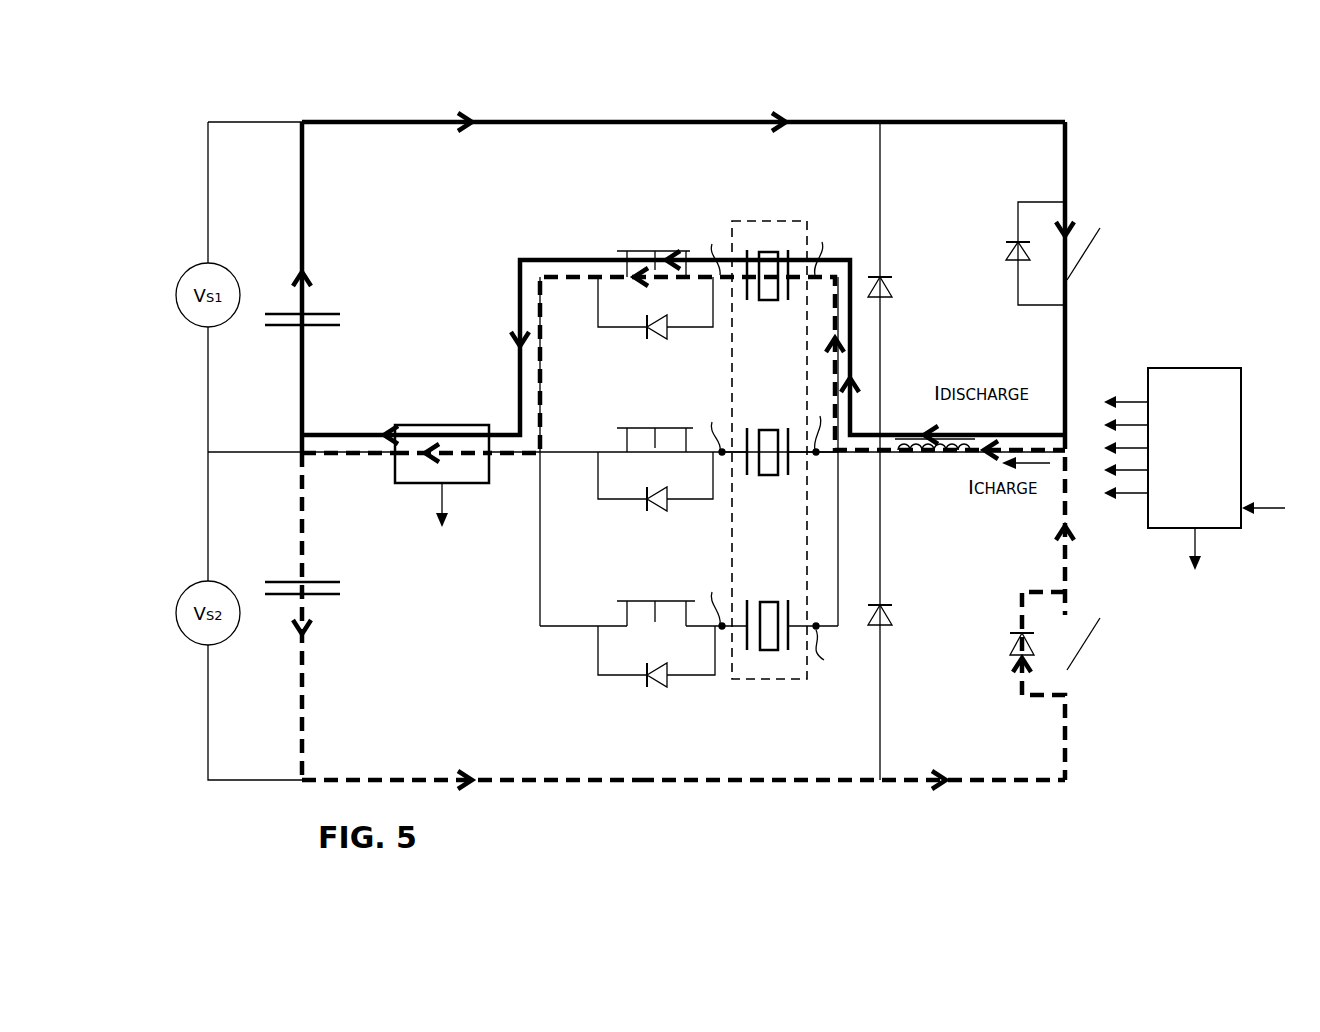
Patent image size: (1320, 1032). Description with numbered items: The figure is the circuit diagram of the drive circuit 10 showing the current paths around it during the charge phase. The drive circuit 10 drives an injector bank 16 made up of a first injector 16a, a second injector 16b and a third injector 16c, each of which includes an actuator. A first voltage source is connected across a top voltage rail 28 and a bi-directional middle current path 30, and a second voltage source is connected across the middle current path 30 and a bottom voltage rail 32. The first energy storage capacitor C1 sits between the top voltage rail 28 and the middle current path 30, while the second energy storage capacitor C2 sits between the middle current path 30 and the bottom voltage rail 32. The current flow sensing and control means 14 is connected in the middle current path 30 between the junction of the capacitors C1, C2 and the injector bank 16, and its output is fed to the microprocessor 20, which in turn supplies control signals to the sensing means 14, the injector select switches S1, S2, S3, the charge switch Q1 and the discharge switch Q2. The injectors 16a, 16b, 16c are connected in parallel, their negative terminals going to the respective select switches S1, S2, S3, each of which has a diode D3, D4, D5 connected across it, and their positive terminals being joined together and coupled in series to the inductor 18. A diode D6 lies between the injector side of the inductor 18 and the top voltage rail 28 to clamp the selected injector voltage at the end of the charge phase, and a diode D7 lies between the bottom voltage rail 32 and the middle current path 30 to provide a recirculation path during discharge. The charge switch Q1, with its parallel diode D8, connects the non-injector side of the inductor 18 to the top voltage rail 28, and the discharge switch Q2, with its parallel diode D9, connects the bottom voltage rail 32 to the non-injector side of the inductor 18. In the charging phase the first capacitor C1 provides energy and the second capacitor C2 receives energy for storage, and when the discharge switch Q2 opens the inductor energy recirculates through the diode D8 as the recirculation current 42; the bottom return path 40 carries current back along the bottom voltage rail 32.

The drive circuit 10 is at (1034, 104).
The current flow sensing and control means 14 is at (440, 424).
The injector bank 16 is at (770, 460).
The first injector 16a is at (770, 250).
The second injector 16b is at (770, 428).
The third injector 16c is at (770, 600).
The inductor 18 is at (936, 456).
The microprocessor 20 is at (1190, 458).
The top voltage rail 28 is at (345, 120).
The bi-directional middle current path 30 is at (347, 450).
The bottom voltage rail 32 is at (348, 778).
The lower return line 40 is at (850, 788).
The recirculation discharge current 42 is at (706, 120).
The first energy storage capacitor C1 is at (276, 311).
The second energy storage capacitor C2 is at (276, 580).
The injector select switch S1 is at (640, 249).
The injector select switch S2 is at (640, 426).
The injector select switch S3 is at (640, 600).
The diode D3 is at (658, 345).
The diode D4 is at (658, 515).
The diode D5 is at (660, 690).
The diode D6 is at (895, 288).
The diode D7 is at (895, 614).
The diode D8 is at (1005, 245).
The diode D9 is at (1010, 641).
The charge switch Q1 is at (1090, 245).
The discharge switch Q2 is at (1095, 636).